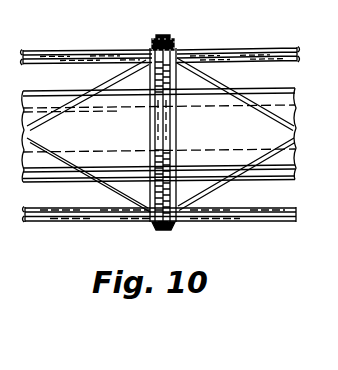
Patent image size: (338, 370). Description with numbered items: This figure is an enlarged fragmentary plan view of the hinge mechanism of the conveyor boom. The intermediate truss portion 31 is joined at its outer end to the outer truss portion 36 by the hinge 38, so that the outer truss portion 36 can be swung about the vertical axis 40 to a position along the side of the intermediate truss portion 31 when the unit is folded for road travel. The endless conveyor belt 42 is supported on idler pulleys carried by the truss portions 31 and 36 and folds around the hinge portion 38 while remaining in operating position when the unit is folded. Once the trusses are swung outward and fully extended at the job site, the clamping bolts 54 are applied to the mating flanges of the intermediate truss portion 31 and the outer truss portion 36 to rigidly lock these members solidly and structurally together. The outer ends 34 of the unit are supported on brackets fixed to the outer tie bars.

The intermediate truss portion 31 is at (248, 50).
The outer ends 34 is at (151, 150).
The outer truss portion 36 is at (57, 50).
The hinge 38 is at (166, 229).
The vertical axis 40 is at (163, 226).
The endless conveyor belt 42 is at (236, 141).
The clamping bolts 54 is at (168, 36).